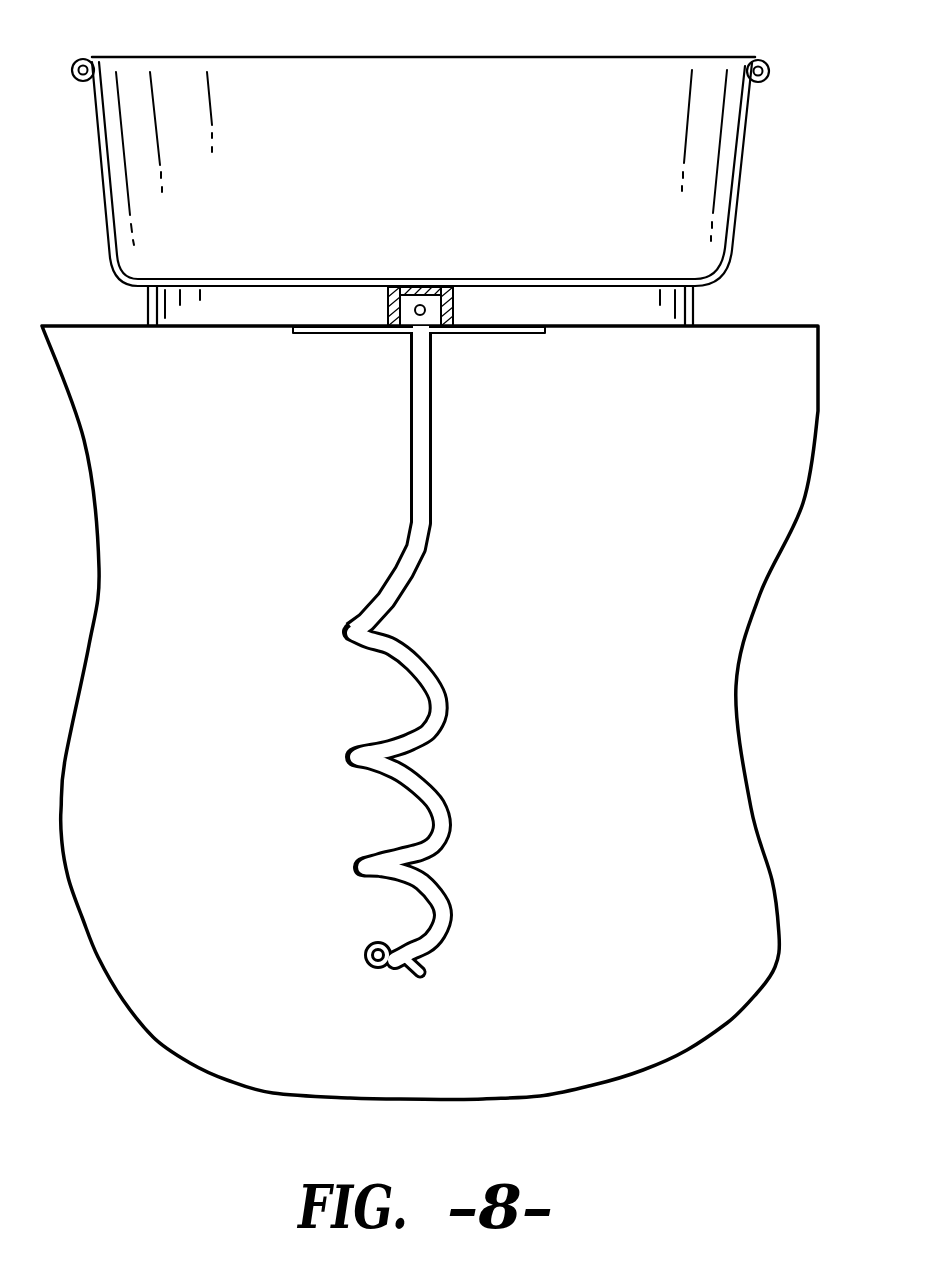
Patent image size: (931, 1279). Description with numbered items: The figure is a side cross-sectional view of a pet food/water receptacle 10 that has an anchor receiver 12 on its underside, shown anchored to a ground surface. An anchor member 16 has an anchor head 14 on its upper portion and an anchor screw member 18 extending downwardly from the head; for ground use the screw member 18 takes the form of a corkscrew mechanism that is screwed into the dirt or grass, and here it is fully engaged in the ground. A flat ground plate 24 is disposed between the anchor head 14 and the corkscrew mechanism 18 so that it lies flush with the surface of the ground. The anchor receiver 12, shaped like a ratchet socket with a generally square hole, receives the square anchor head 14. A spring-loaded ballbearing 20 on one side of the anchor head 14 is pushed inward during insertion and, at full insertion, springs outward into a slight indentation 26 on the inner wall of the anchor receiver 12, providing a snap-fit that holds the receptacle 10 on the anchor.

The pet food/water receptacle 10 is at (518, 53).
The anchor receiver 12 is at (455, 305).
The anchor head 14 is at (408, 313).
The anchor member 16 is at (455, 517).
The anchor screw member 18 is at (449, 695).
The spring-loaded ballbearing 20 is at (416, 303).
The ground plate 24 is at (322, 337).
The indentation 26 is at (403, 293).